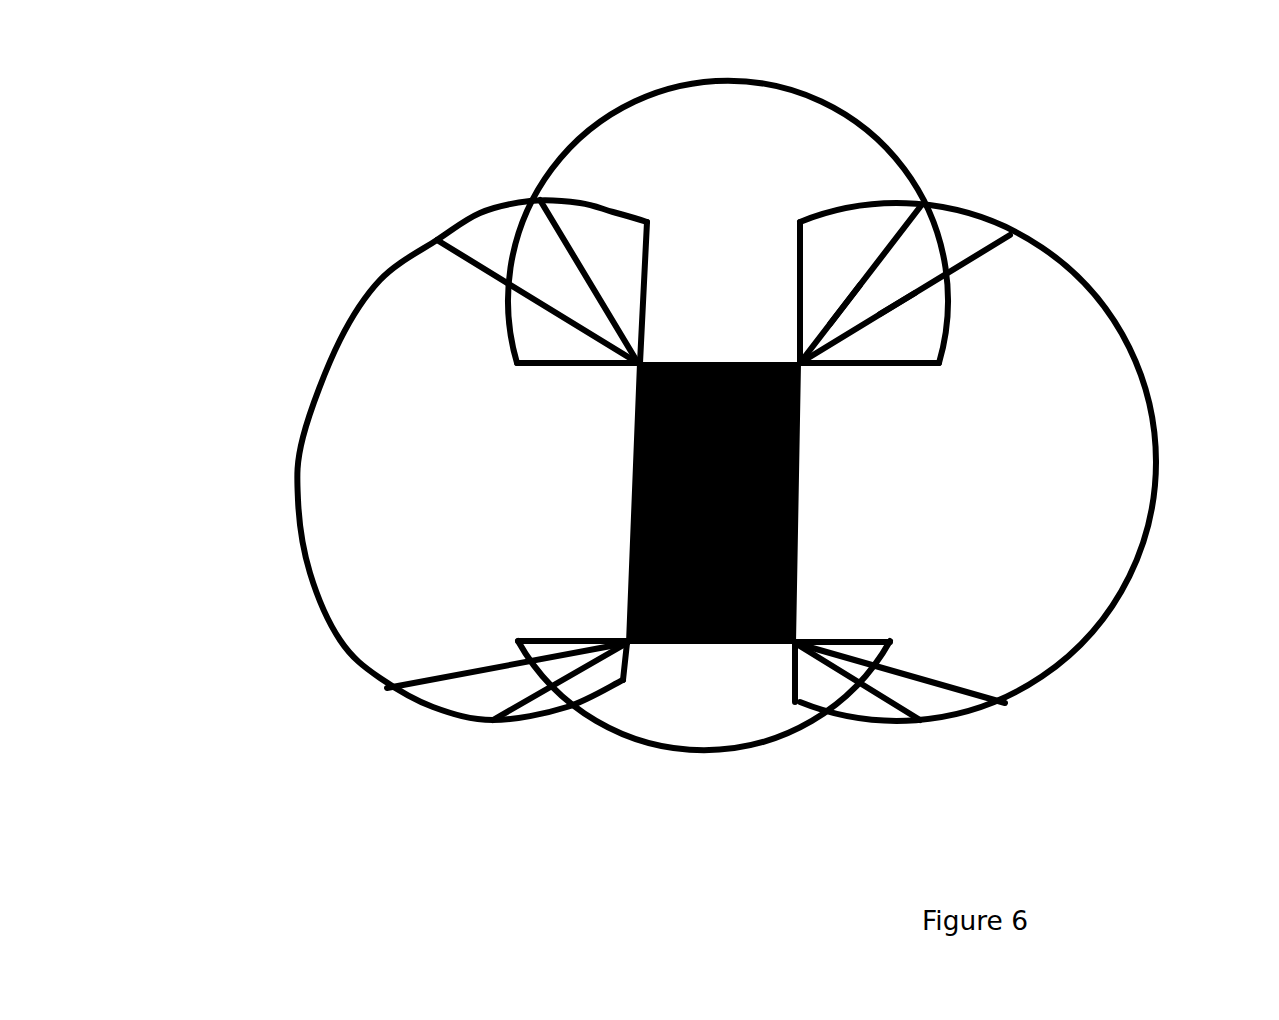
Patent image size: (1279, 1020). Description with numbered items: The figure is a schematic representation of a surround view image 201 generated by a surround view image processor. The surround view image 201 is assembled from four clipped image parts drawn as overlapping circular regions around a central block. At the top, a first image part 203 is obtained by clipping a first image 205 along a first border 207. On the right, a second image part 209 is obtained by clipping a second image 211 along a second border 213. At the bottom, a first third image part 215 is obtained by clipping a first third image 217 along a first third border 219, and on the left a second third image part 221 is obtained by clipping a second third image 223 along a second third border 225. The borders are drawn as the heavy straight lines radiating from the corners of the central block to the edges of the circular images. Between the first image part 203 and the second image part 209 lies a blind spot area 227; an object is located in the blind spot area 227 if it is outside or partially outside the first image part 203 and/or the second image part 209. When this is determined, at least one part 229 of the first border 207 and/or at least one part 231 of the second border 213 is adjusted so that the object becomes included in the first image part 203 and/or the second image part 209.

The surround view image 201 is at (268, 158).
The first image part 203 is at (847, 162).
The first image 205 is at (568, 100).
The first border 207 is at (563, 243).
The second image part 209 is at (1058, 368).
The second image 211 is at (1130, 287).
The second border 213 is at (1063, 258).
The first third image part 215 is at (873, 832).
The first third image 217 is at (503, 904).
The first third border 219 is at (517, 717).
The second third image part 221 is at (333, 445).
The second third image 223 is at (255, 535).
The second third border 225 is at (467, 263).
The blind spot area 227 is at (975, 250).
The part of the first border 229 is at (845, 293).
The part of the second border 231 is at (897, 303).